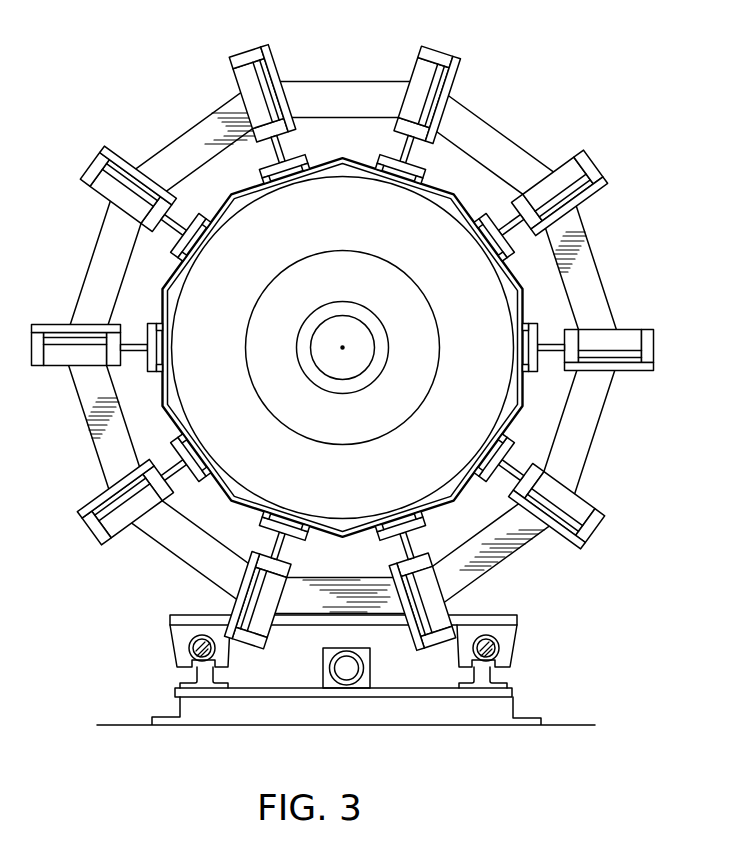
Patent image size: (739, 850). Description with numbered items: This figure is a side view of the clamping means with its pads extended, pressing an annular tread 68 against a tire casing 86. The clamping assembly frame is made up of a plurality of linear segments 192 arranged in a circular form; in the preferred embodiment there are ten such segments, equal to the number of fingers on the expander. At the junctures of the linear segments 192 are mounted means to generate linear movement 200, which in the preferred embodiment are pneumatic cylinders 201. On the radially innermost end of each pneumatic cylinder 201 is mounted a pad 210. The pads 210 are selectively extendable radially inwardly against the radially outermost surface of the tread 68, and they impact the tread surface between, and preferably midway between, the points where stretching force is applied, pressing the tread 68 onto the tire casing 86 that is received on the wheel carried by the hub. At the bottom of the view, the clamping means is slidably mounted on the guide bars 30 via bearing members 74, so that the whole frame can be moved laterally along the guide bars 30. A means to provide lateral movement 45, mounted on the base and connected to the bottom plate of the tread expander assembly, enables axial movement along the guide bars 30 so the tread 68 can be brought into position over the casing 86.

The linear segment 192 is at (345, 93).
The pneumatic cylinder 201 is at (243, 70).
The means to generate linear movement 200 is at (623, 340).
The pad 210 is at (420, 173).
The annular tread 68 is at (523, 308).
The tire casing 86 is at (497, 385).
The bearing member 74 is at (180, 637).
The guide bar 30 is at (190, 652).
The means to provide lateral movement 45 is at (347, 675).